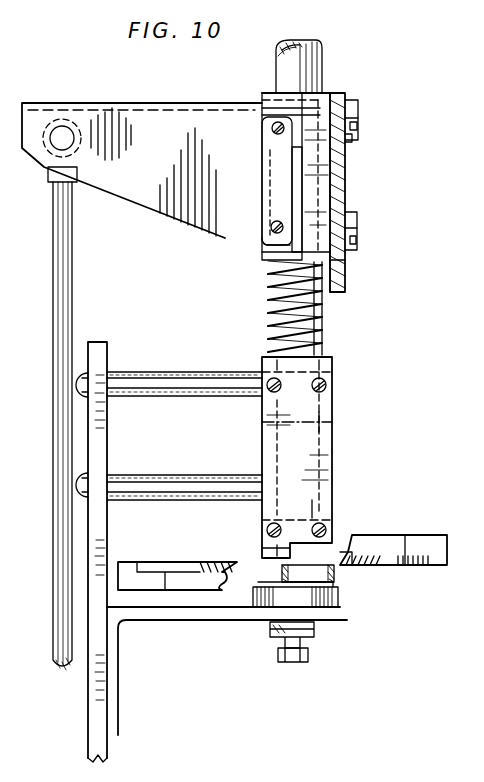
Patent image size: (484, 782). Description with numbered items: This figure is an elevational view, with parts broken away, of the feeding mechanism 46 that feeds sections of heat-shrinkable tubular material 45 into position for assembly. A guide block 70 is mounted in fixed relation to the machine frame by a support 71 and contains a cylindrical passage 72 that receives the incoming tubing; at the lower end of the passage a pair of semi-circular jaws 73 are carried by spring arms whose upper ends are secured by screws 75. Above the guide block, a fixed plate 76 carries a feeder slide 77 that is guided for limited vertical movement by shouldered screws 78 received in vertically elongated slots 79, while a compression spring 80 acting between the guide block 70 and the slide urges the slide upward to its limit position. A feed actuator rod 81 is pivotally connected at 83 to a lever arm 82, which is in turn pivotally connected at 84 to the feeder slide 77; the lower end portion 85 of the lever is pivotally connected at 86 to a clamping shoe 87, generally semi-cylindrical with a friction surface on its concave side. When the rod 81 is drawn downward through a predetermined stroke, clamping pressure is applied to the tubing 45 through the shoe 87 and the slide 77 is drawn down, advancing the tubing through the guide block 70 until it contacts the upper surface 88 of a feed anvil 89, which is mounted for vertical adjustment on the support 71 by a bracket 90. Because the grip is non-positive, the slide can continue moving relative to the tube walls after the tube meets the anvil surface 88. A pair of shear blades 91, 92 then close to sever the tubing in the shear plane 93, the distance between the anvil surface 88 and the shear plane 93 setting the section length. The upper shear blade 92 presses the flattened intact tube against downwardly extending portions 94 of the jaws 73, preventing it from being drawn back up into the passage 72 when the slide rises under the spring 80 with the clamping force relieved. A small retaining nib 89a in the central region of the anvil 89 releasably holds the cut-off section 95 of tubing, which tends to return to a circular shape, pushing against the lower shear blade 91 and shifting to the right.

The heat-shrinkable tubular material 45 is at (323, 70).
The feeding mechanism 46 is at (378, 196).
The guide block 70 is at (335, 365).
The support 71 is at (95, 716).
The cylindrical passage 72 is at (325, 422).
The semi-circular jaws 73 is at (312, 517).
The screws 75 is at (323, 384).
The fixed plate 76 is at (347, 268).
The feeder slide 77 is at (352, 248).
The shouldered screws 78 is at (353, 116).
The vertically elongated slots 79 is at (352, 140).
The compression spring 80 is at (323, 328).
The feed actuator rod 81 is at (64, 290).
The lever arm 82 is at (163, 122).
The pivotal connection 83 is at (62, 136).
The pivotal connection 84 is at (272, 130).
The lower end portion of lever 85 is at (246, 222).
The pivotal connection 86 is at (270, 230).
The clamping shoe 87 is at (297, 185).
The upper surface of feed anvil 88 is at (337, 578).
The feed anvil 89 is at (330, 620).
The retaining nib 89a is at (304, 590).
The bracket 90 is at (118, 715).
The lower shear blade 91 is at (200, 528).
The upper shear blade 92 is at (385, 552).
The shear plane 93 is at (275, 563).
The downwardly extending portions of gripping jaws 94 is at (252, 548).
The cut-off section of tubing 95 is at (335, 576).